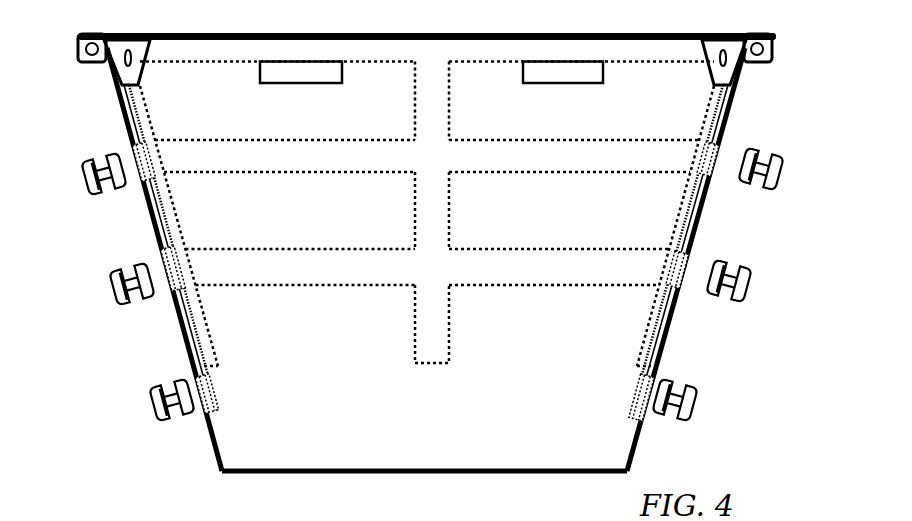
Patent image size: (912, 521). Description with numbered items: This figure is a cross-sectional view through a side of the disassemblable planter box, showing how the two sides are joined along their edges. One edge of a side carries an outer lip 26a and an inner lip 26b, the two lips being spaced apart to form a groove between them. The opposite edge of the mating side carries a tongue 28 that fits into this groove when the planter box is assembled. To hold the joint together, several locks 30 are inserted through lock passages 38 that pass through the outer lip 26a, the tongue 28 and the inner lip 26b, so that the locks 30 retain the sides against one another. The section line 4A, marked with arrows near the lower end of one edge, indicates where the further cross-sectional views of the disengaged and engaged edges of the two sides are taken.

The outer lip 26a is at (146, 221).
The inner lip 26b is at (152, 232).
The tongue 28 is at (700, 222).
The lock 30 is at (118, 94).
The lock passage 38 is at (134, 158).
The section line 4A- 4A is at (668, 371).